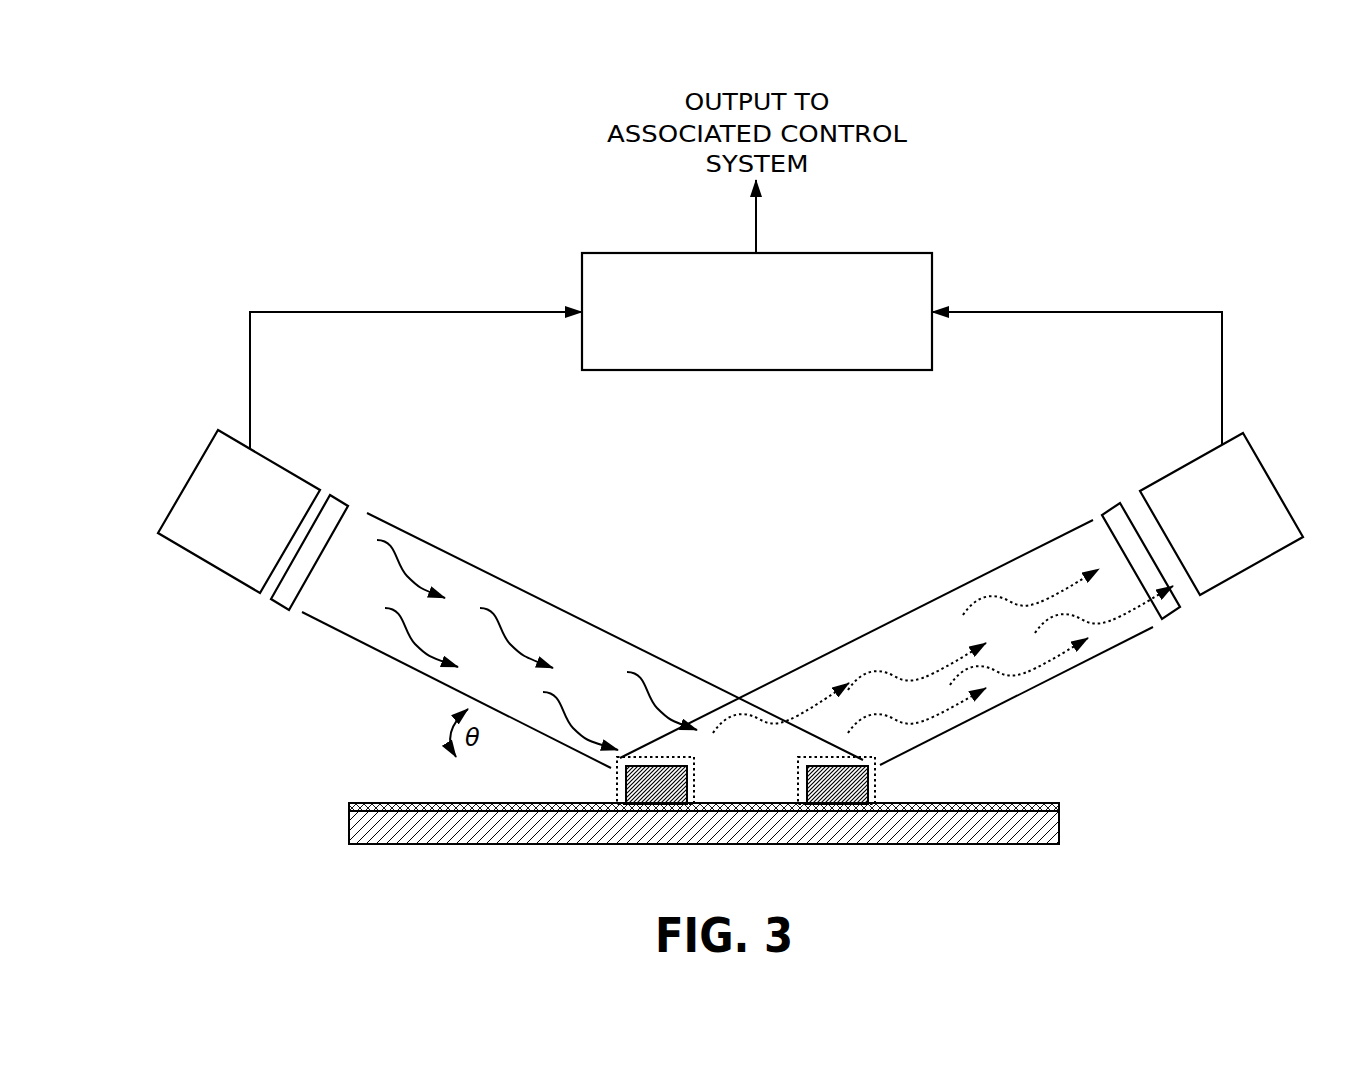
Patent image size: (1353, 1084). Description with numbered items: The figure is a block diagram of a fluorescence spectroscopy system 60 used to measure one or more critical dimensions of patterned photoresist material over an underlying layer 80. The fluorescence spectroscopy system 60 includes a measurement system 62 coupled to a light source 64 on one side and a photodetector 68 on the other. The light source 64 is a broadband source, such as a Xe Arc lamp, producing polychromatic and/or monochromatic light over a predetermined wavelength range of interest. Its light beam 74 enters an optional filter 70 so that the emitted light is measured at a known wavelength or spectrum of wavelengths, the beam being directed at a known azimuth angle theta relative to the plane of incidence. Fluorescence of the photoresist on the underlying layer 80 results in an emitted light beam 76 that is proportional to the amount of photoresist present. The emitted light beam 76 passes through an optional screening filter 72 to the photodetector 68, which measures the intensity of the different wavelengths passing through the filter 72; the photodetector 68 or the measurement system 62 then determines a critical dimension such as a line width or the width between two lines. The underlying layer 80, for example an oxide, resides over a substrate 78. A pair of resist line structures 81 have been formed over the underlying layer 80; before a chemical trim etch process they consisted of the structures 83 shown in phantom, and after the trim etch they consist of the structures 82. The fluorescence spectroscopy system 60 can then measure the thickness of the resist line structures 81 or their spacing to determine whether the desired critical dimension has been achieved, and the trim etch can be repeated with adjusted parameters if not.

The fluorescence spectroscopy system 60 is at (1098, 179).
The measurement system 62 is at (843, 253).
The light source 64 is at (205, 560).
The photodetector 68 is at (1238, 577).
The filter 70 is at (340, 497).
The screening filter 72 is at (1113, 508).
The light beam 74 is at (492, 575).
The emitted light beam 76 is at (958, 585).
The substrate 78 is at (1059, 830).
The underlying layer 80 is at (1059, 805).
The resist line structures 81 is at (583, 770).
The structures 82 is at (625, 792).
The structures 83 is at (695, 763).